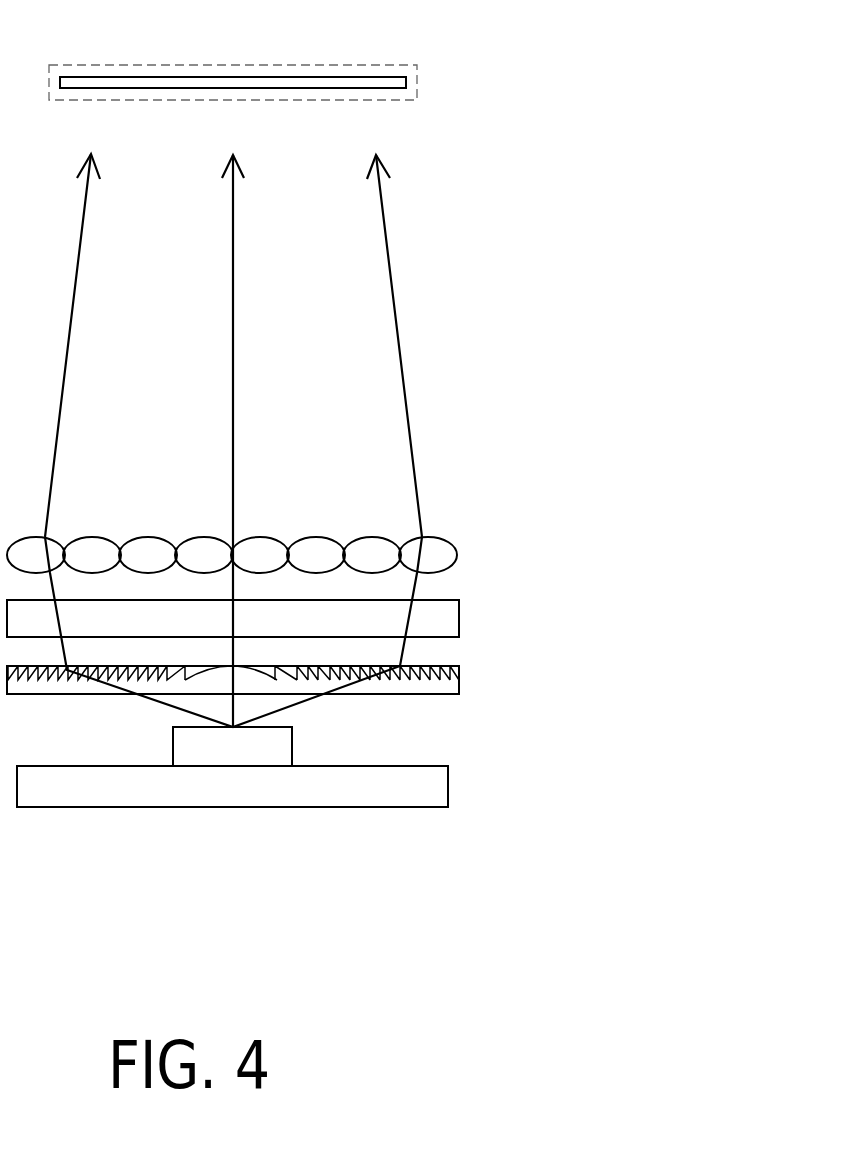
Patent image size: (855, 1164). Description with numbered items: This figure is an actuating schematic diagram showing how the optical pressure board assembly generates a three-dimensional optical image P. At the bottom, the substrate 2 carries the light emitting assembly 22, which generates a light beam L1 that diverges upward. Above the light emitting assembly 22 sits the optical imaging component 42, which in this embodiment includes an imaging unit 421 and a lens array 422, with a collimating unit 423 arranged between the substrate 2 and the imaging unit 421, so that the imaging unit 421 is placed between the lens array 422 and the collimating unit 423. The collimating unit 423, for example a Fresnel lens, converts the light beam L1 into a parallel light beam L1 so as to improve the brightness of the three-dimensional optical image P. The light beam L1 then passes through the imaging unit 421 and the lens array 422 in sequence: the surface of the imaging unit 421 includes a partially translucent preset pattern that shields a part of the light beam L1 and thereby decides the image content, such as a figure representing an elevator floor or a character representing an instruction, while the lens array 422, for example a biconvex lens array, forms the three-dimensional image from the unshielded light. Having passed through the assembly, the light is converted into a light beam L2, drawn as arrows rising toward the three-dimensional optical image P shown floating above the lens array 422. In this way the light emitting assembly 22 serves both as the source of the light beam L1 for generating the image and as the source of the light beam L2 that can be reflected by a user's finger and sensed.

The three-dimensional optical image P is at (406, 82).
The light beam L2 is at (402, 375).
The optical imaging component 42 is at (309, 615).
The lens array 422 is at (452, 553).
The imaging unit 421 is at (450, 618).
The collimating unit 423 is at (282, 671).
The light beam L1 is at (302, 705).
The light emitting assembly 22 is at (280, 745).
The substrate 2 is at (372, 797).